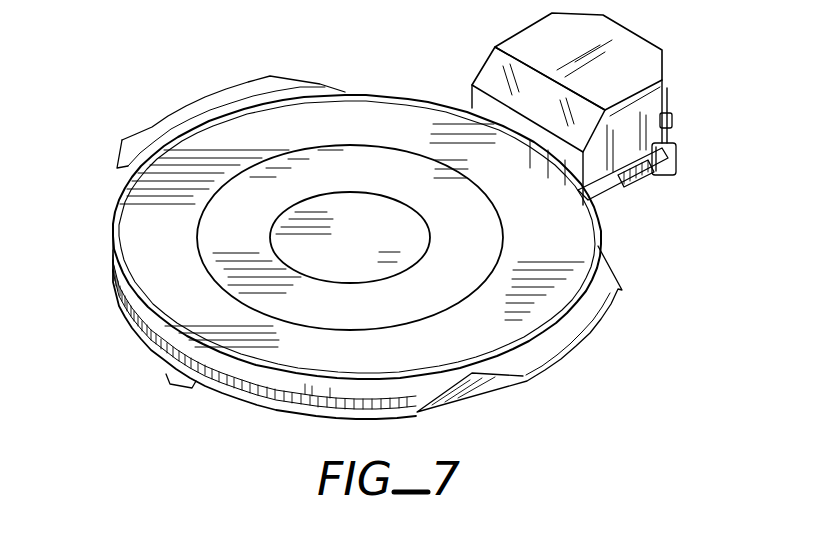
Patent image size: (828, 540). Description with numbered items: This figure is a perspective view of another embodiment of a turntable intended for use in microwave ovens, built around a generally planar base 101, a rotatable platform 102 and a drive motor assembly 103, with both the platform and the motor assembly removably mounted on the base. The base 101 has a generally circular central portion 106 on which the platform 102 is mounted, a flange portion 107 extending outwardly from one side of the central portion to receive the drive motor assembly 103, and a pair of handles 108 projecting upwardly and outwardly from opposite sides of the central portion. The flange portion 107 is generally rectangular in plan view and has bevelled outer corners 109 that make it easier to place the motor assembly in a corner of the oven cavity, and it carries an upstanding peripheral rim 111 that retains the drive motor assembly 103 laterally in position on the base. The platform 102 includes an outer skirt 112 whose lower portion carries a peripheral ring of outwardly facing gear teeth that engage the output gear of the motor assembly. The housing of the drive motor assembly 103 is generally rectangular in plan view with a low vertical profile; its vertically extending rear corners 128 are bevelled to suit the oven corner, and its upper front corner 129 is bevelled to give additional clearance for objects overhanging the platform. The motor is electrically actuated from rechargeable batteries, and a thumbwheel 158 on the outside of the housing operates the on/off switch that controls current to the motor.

The base 101 is at (143, 357).
The rotatable platform 102 is at (365, 247).
The drive motor assembly 103 is at (560, 108).
The central portion 106 is at (232, 408).
The flange portion 107 is at (608, 195).
The handles 108 is at (205, 105).
The bevelled outer corners 109 is at (672, 137).
The peripheral rim 111 is at (667, 110).
The outer skirt 112 is at (338, 392).
The rear corners 128 is at (667, 57).
The upper front corner 129 is at (485, 75).
The thumbwheel 158 is at (652, 176).